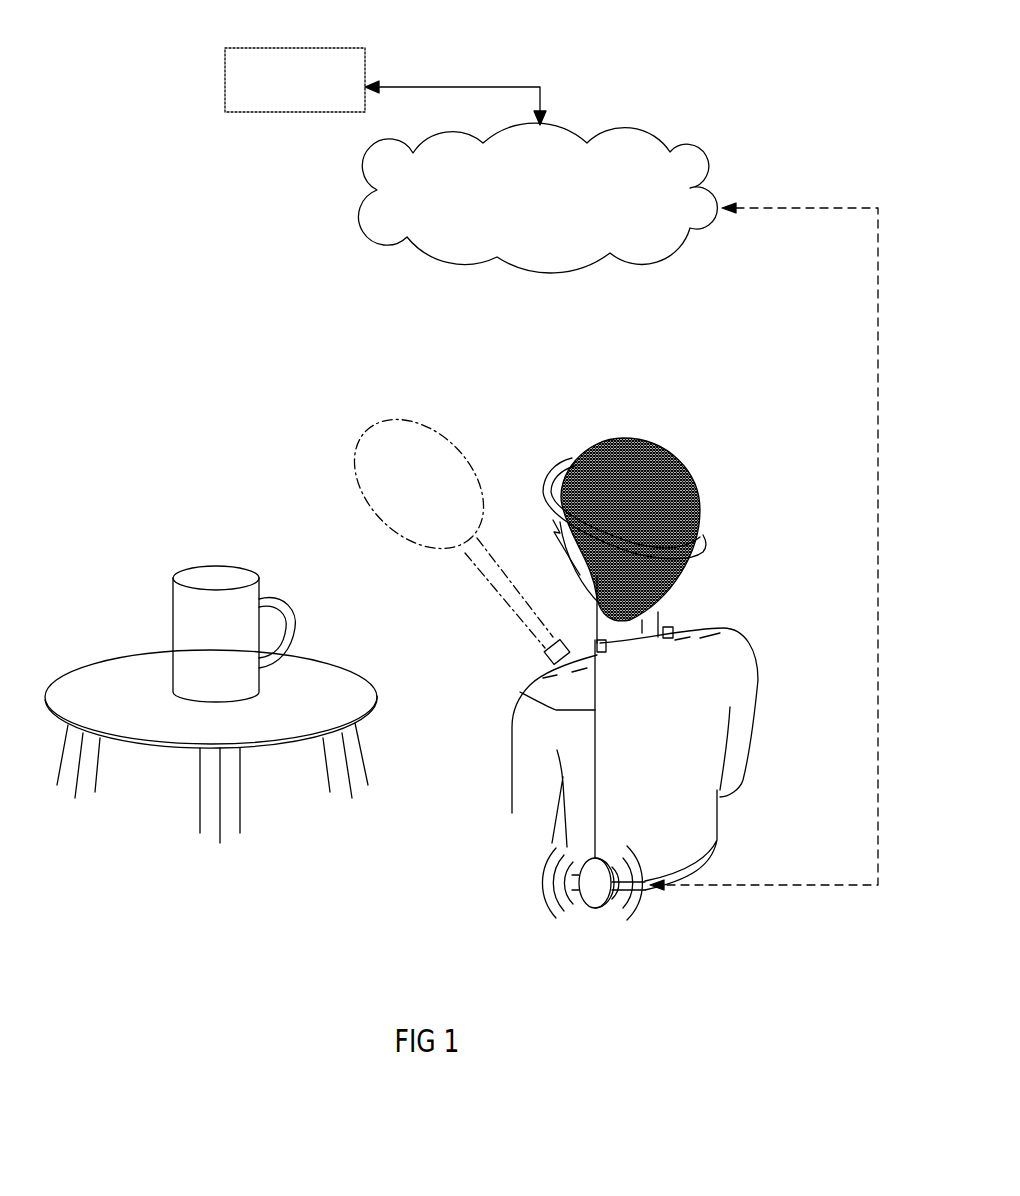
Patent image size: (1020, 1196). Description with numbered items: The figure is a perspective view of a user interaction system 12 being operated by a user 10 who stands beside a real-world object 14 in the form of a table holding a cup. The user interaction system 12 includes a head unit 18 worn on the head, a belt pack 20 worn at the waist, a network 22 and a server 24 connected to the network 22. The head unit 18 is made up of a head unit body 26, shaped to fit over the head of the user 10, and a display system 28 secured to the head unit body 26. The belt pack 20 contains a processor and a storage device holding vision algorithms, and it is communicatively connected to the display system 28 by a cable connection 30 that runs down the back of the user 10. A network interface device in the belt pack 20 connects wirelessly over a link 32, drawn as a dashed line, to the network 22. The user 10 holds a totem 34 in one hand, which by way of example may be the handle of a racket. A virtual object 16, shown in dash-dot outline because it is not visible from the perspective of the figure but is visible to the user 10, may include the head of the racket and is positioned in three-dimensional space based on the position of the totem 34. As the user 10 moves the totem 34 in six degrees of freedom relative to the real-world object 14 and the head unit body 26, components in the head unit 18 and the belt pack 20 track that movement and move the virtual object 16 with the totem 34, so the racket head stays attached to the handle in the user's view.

The user 10 is at (740, 652).
The user interaction system 12 is at (745, 67).
The real-world object 14 is at (123, 660).
The virtual object 16 is at (453, 450).
The head unit 18 is at (552, 452).
The belt pack 20 is at (598, 910).
The network 22 is at (538, 198).
The server 24 is at (385, 86).
The head unit body 26 is at (705, 535).
The display system 28 is at (545, 515).
The cable connection 30 is at (520, 692).
The link 32 is at (877, 405).
The totem 34 is at (546, 657).